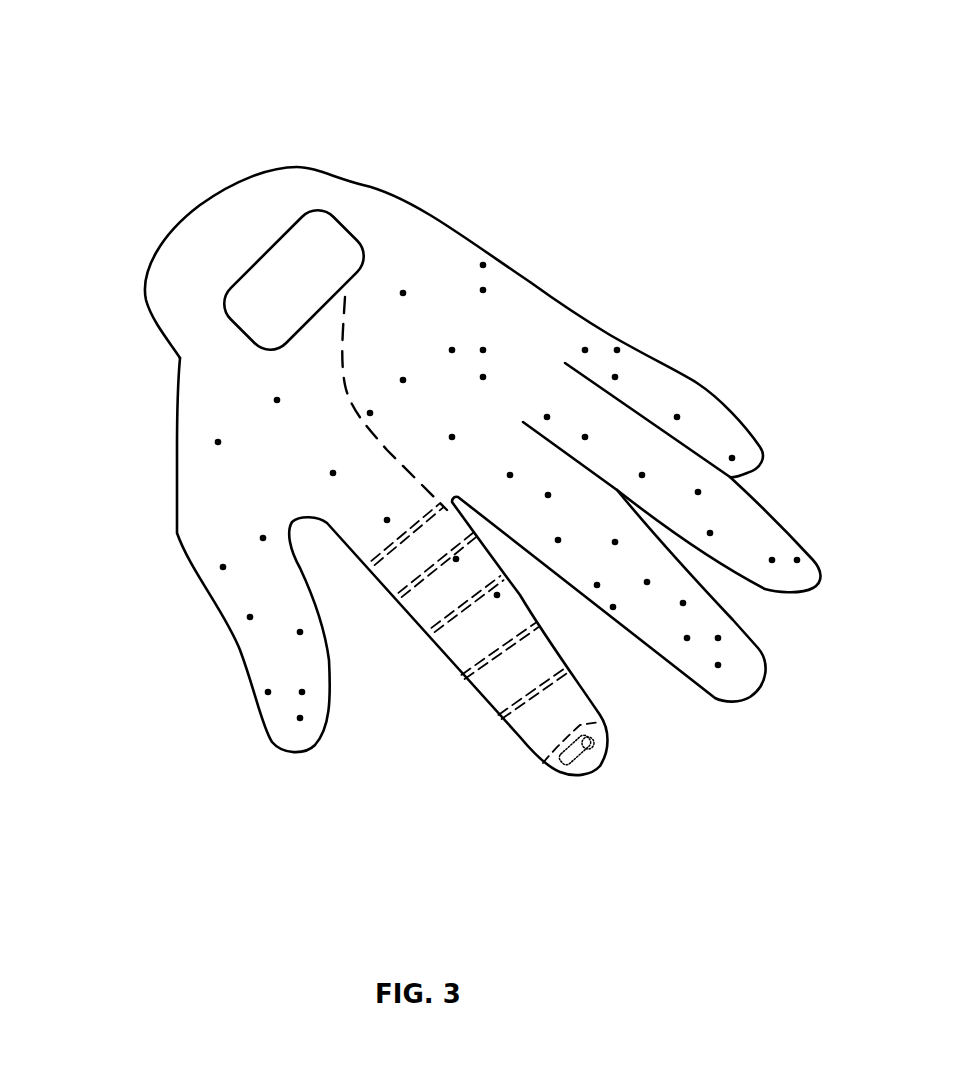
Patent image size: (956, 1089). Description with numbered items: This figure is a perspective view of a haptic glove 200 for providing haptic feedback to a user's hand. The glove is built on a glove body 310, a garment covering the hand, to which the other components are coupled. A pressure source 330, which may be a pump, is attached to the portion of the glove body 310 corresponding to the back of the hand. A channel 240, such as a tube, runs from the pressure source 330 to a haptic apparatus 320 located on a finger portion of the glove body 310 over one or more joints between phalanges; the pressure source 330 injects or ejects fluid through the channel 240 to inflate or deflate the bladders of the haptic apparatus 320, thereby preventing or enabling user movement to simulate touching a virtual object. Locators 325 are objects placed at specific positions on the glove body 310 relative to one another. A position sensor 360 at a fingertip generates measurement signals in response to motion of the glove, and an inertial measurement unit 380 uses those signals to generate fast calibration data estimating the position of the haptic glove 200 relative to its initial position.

The haptic glove system 200 is at (70, 26).
The glove body 310 is at (180, 358).
The pressure source 330 is at (312, 252).
The channel 240 is at (342, 410).
The locators 325 is at (618, 347).
The haptic apparatus 320 is at (472, 662).
The position sensor 360 is at (597, 743).
The inertial measurement unit 380 is at (577, 768).